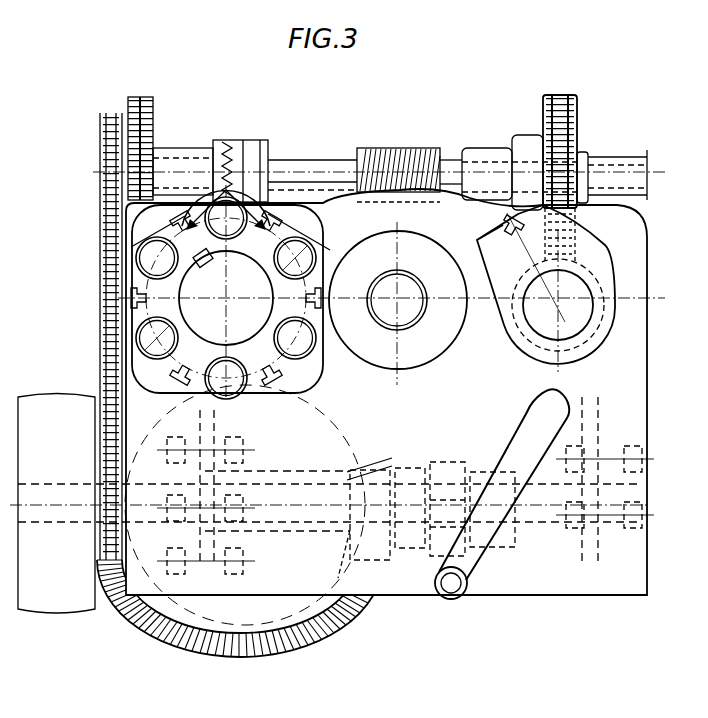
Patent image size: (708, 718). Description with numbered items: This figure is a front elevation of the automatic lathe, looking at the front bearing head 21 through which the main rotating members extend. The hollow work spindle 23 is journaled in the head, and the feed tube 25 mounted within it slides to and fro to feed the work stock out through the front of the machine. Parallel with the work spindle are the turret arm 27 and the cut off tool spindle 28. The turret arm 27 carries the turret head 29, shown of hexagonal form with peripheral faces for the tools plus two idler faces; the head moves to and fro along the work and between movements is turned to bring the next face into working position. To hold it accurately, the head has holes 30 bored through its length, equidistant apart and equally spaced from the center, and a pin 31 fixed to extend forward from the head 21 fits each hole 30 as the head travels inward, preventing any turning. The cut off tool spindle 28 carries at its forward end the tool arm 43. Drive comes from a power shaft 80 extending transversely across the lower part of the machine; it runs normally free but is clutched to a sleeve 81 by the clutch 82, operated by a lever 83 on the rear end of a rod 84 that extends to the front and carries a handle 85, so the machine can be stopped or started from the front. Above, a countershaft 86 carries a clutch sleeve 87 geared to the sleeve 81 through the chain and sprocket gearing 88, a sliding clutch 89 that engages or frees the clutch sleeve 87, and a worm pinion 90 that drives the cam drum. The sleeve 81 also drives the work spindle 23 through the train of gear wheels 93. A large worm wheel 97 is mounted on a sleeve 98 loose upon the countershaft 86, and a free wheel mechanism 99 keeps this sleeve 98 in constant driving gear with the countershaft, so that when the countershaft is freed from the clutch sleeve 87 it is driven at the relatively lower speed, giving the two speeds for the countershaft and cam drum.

The bearing head 21 is at (337, 407).
The hollow work spindle 23 is at (398, 303).
The feed tube 25 is at (397, 300).
The turret arm 27 is at (226, 298).
The cut off tool spindle 28 is at (558, 301).
The turret head 29 is at (230, 291).
The holes 30 is at (226, 318).
The pin 31 is at (226, 218).
The tool arm 43 is at (546, 284).
The power shaft 80 is at (487, 562).
The sleeve 81 is at (340, 598).
The clutch 82 is at (416, 566).
The lever 83 is at (440, 566).
The rod 84 is at (451, 599).
The handle 85 is at (498, 528).
The countershaft 86 is at (334, 168).
The clutch sleeve 87 is at (178, 158).
The chain and sprocket gearing 88 is at (100, 236).
The sliding clutch 89 is at (152, 121).
The worm pinion 90 is at (411, 148).
The train of gear wheels 93 is at (247, 659).
The worm wheel 97 is at (572, 126).
The sleeve 98 is at (527, 152).
The free wheel mechanism 99 is at (475, 158).